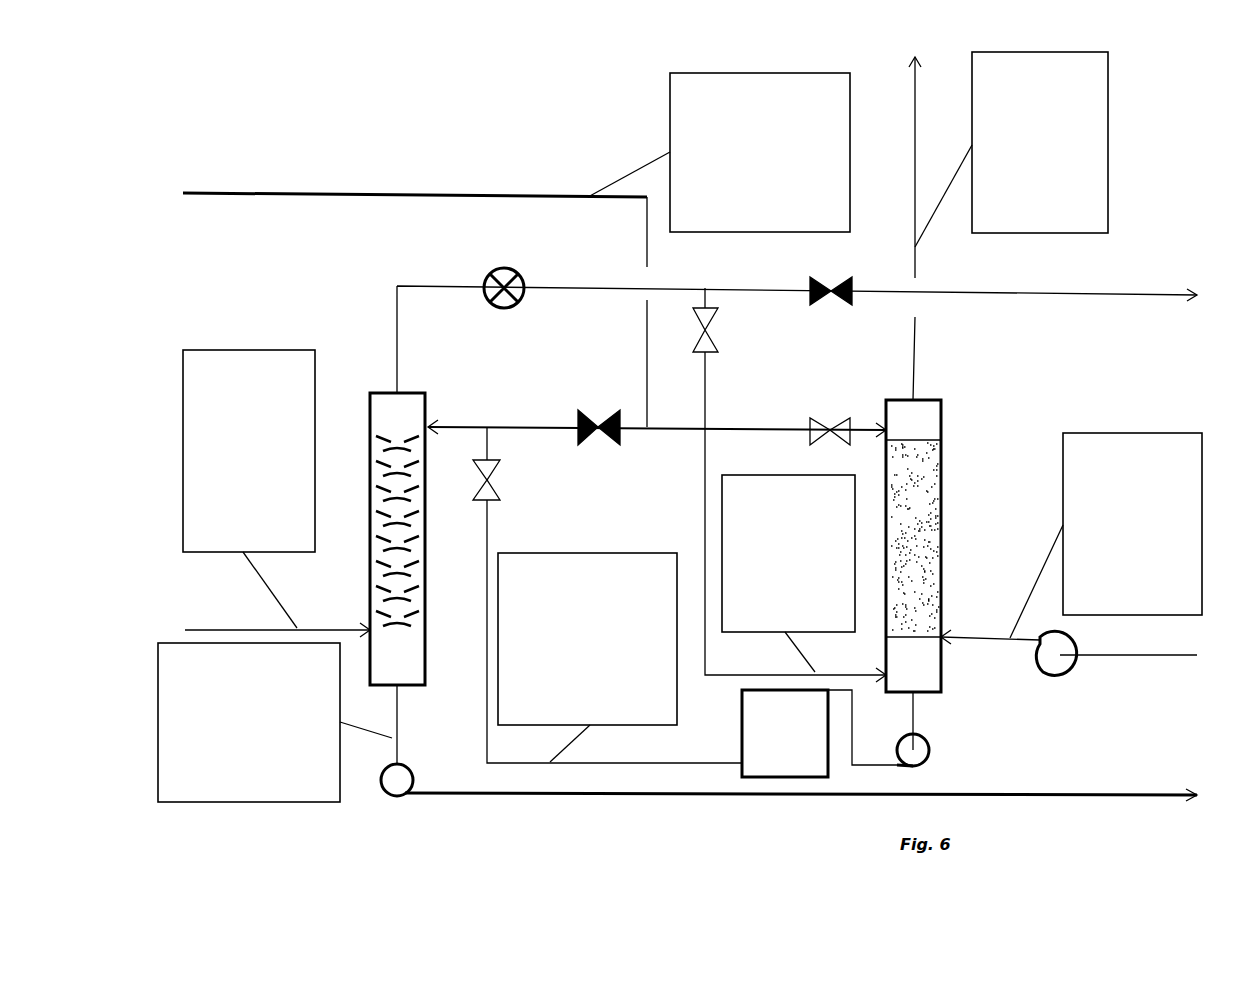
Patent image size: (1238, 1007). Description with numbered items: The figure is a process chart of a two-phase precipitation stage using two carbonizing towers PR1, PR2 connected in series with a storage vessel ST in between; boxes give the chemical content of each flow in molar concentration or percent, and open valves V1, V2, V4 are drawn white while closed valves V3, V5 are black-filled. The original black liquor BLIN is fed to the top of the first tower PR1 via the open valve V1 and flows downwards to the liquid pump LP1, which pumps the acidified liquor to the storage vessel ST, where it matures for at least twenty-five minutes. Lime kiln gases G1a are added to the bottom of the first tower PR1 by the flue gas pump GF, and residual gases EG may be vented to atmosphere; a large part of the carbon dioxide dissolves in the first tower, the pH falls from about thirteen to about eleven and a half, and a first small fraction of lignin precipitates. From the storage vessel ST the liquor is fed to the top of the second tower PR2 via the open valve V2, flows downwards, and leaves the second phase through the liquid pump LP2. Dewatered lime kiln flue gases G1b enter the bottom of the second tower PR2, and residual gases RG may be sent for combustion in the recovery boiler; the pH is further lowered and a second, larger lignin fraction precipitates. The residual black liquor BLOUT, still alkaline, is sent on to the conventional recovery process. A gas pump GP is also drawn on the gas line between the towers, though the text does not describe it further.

The original black liquor BLIN is at (516, 250).
The residual black liquor BLOUT is at (677, 722).
The residual gases RG is at (797, 328).
The residual gases EG is at (1008, 226).
The gas pump GP is at (504, 303).
The flue gas pump GF is at (1069, 668).
The valve V1 is at (830, 418).
The valve V2 is at (607, 595).
The valve V3 is at (657, 416).
The valve V4 is at (789, 485).
The valve V5 is at (831, 278).
The first carbonizing tower PR1 is at (851, 529).
The second carbonizing tower PR2 is at (414, 527).
The liquid pump LP1 is at (908, 739).
The liquid pump LP2 is at (418, 740).
The storage vessel ST is at (819, 733).
The lime kiln gases G1a is at (1106, 535).
The lime kiln flue gases G1b is at (276, 493).